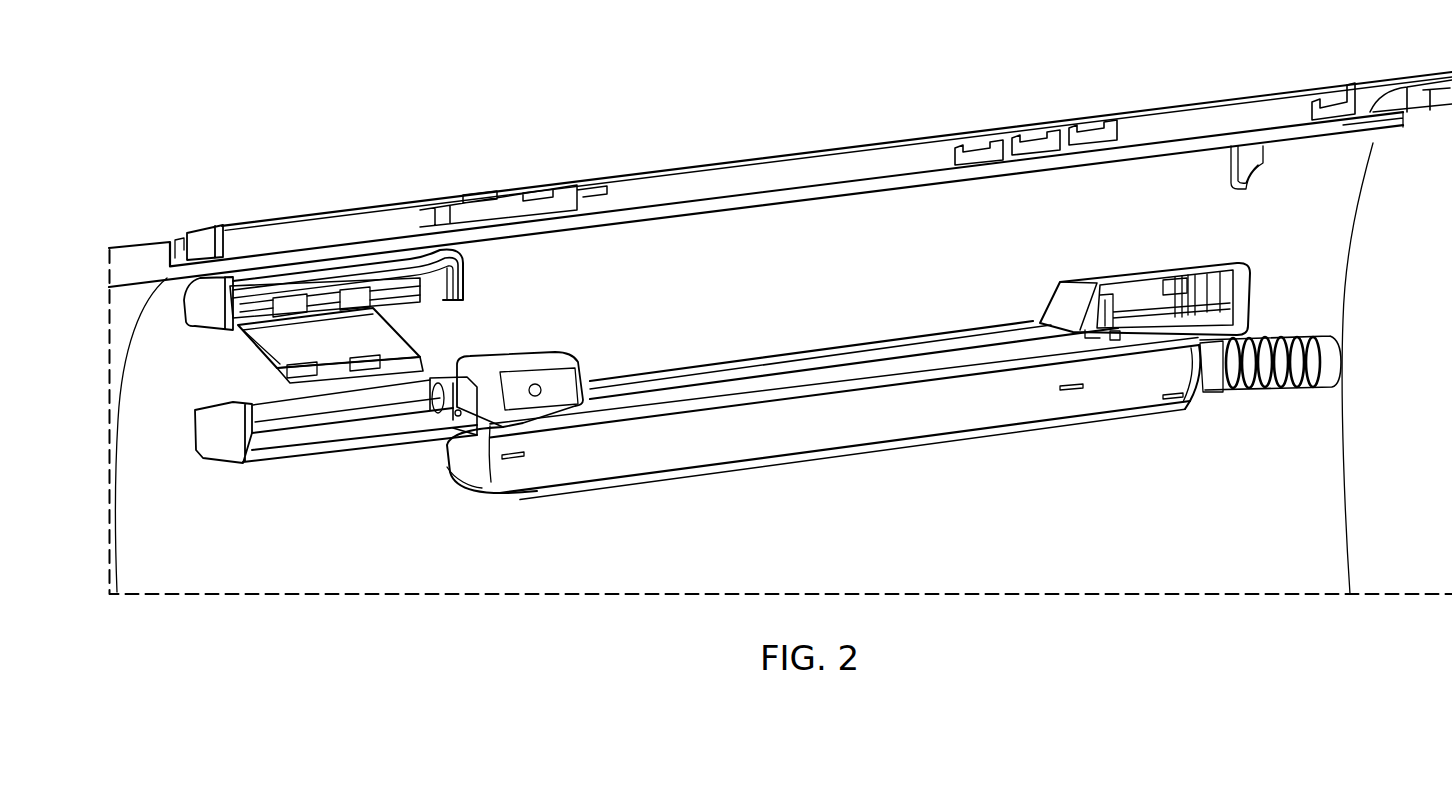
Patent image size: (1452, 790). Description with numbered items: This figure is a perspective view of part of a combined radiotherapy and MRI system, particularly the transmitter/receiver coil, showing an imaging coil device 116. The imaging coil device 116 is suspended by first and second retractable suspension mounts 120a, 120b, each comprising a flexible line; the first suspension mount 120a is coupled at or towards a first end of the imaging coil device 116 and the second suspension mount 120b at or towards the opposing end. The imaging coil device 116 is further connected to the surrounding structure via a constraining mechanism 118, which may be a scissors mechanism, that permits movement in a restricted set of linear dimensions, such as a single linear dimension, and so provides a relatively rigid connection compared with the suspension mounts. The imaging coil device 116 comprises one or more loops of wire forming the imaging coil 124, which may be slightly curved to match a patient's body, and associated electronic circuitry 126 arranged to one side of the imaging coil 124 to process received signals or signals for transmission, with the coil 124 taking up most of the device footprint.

The imaging coil device 116 is at (780, 440).
The constraining mechanism 118 is at (211, 376).
The first retractable suspension mount 120a is at (605, 377).
The second retractable suspension mount 120b is at (1013, 325).
The imaging coil 124 is at (875, 367).
The electronic circuitry 126 is at (1153, 318).